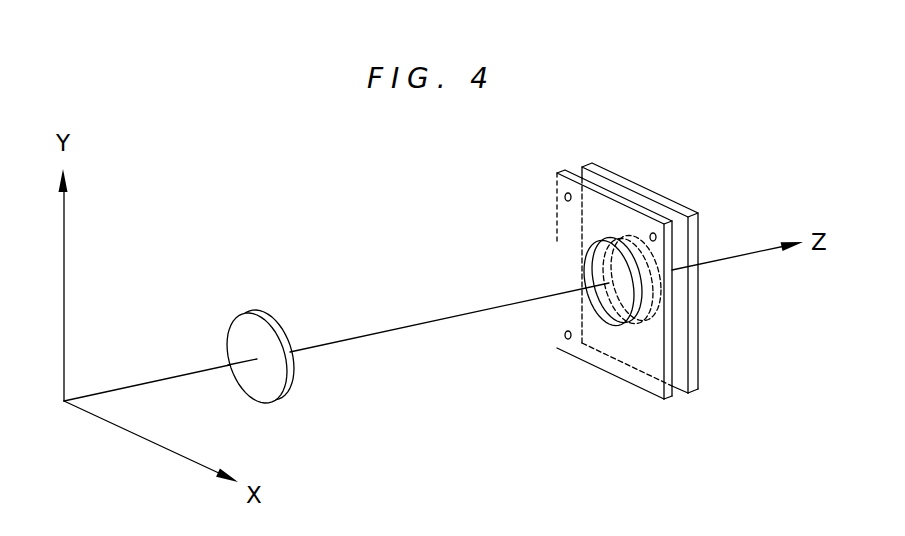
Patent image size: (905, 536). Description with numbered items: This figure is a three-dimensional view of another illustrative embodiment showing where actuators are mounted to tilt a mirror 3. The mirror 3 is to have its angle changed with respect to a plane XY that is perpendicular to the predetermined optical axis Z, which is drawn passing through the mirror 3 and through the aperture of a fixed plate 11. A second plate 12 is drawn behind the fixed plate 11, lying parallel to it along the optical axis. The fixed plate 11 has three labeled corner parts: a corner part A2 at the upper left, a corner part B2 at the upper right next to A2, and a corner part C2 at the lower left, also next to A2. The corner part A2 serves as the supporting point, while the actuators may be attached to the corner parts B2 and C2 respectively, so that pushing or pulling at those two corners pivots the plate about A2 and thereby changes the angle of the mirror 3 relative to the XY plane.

The mirror 3 is at (273, 312).
The fixed plate 11 is at (559, 173).
The rear mounting plate 12 is at (583, 167).
The corner part A2 is at (565, 198).
The corner part B2 is at (653, 233).
The corner part C2 is at (568, 339).